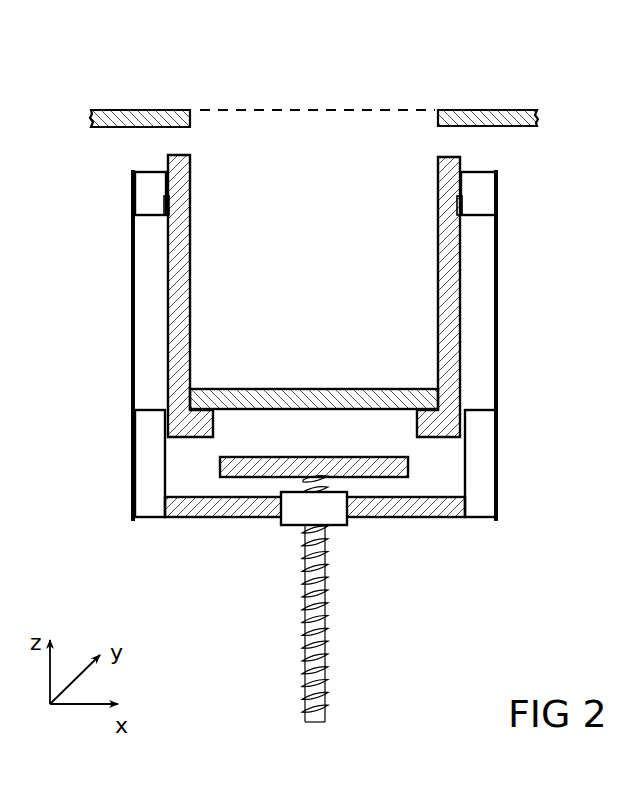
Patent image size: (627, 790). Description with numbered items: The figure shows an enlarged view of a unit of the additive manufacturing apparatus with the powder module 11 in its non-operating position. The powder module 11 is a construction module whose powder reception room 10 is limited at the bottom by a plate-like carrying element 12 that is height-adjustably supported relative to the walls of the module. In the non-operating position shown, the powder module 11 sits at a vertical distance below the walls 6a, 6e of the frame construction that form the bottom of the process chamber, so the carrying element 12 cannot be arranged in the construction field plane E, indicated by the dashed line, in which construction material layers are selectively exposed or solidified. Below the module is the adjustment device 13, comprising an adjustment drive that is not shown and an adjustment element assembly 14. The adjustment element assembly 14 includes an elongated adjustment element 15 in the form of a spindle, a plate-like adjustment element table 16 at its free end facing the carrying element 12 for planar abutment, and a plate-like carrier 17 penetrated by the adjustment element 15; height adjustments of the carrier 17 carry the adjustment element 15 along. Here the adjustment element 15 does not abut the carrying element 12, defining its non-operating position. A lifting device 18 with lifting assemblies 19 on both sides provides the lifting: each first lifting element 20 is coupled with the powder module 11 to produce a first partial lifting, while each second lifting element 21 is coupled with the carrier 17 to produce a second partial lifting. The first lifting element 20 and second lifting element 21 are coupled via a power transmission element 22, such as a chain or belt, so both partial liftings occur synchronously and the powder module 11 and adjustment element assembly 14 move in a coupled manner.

The construction field plane E is at (226, 98).
The wall 6e is at (101, 115).
The wall 6a is at (500, 114).
The powder reception room 10 is at (286, 194).
The powder module 11 is at (190, 262).
The carrying element 12 is at (283, 396).
The adjustment device 13 is at (255, 588).
The adjustment element assembly 14 is at (314, 508).
The adjustment element 15 is at (318, 642).
The adjustment element table 16 is at (245, 470).
The carrier 17 is at (416, 508).
The lifting device 18 is at (105, 380).
The lifting assembly 19 is at (105, 334).
The first lifting element 20 is at (142, 193).
The second lifting element 21 is at (142, 473).
The power transmission element 22 is at (131, 300).